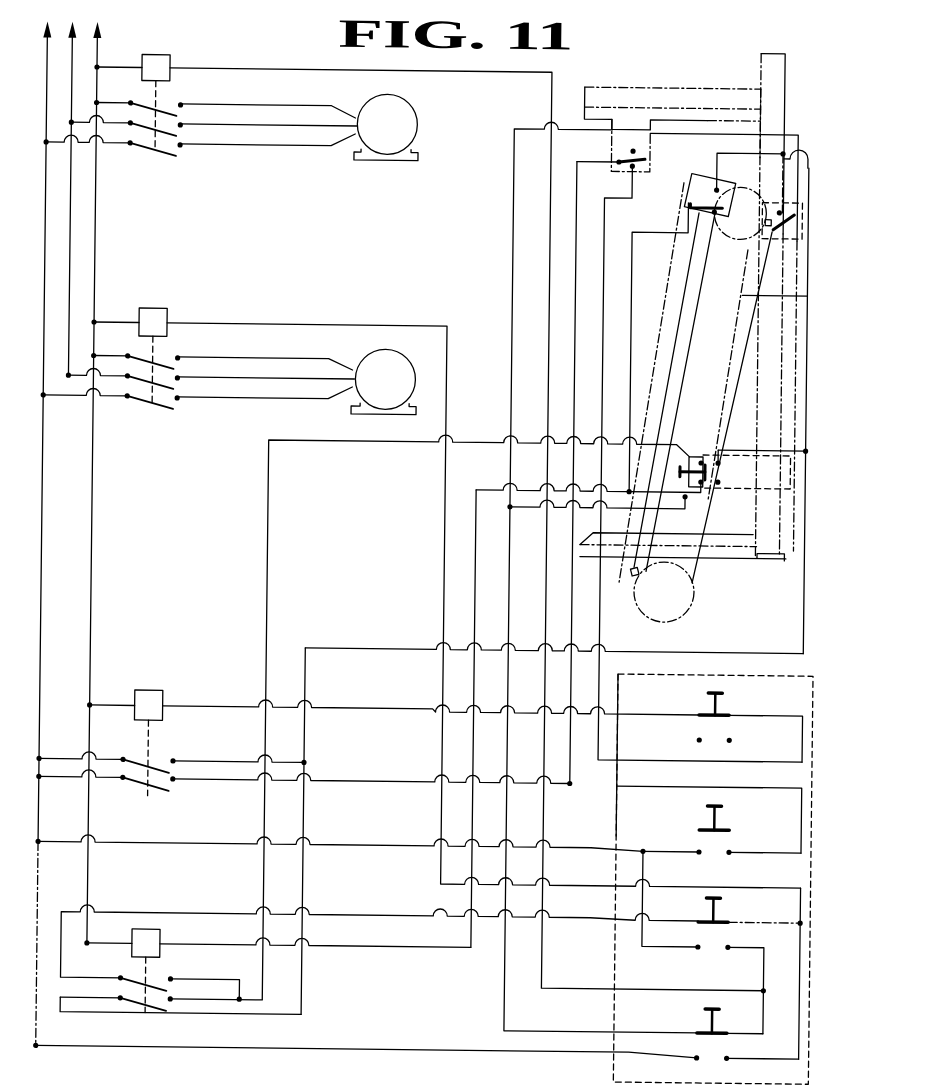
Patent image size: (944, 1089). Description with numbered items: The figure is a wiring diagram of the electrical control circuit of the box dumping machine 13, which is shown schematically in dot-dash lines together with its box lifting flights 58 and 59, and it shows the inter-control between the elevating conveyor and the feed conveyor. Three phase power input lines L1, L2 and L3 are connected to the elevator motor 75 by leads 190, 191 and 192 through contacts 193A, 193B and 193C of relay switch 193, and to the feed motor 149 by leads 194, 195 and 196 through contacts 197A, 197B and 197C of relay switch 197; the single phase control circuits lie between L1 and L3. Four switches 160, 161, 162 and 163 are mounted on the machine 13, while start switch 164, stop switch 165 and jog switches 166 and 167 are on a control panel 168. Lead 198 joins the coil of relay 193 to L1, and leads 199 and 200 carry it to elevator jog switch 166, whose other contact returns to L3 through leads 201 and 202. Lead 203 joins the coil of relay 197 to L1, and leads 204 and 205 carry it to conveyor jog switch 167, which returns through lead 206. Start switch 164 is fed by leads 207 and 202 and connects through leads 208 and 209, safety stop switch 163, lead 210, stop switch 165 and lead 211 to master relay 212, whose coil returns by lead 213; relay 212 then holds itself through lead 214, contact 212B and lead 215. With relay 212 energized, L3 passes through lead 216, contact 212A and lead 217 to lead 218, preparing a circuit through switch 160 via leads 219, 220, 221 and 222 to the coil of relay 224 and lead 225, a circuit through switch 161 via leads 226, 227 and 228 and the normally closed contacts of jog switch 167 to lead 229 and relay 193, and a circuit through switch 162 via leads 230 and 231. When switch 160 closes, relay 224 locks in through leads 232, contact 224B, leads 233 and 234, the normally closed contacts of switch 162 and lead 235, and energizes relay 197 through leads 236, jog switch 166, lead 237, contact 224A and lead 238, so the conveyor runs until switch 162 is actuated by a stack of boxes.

The power input line L1 is at (97, 265).
The power input line L2 is at (72, 246).
The power input line L3 is at (47, 227).
The lead 198 is at (131, 49).
The relay switch 193 is at (158, 67).
The contact of relay switch 193 193A is at (163, 111).
The contact of relay switch 193 193B is at (170, 138).
The contact of relay switch 193 193C is at (148, 153).
The lead 190 is at (262, 104).
The lead 191 is at (268, 124).
The lead 192 is at (262, 144).
The stack elevator conveyor motor 75 is at (410, 124).
The lead 199 is at (354, 68).
The machine 13 is at (684, 80).
The lead 227 is at (515, 227).
The lead 220 is at (763, 128).
The lead 226 is at (774, 146).
The safety stop switch 163 is at (642, 153).
The switch 160 is at (700, 198).
The lead 210 is at (607, 206).
The box lifting flight 59 is at (766, 213).
The switch 161 is at (782, 232).
The lead 221 is at (634, 268).
The lead 219 is at (758, 288).
The lead 209 is at (578, 266).
The lead 203 is at (110, 322).
The relay switch 197 is at (158, 322).
The contact of relay switch 197 197A is at (164, 366).
The contact of relay switch 197 197B is at (166, 388).
The contact of relay switch 197 197C is at (164, 410).
The lead 194 is at (262, 359).
The lead 195 is at (306, 380).
The lead 196 is at (262, 398).
The feed conveyor motor 149 is at (390, 372).
The lead 204 is at (330, 322).
The lead 234 is at (273, 497).
The lead 230 is at (723, 447).
The two-position switch 162 is at (710, 465).
The lead 235 is at (690, 492).
The lead 231 is at (723, 480).
The lead 222 is at (481, 572).
The lead 228 is at (515, 591).
The lead 218 is at (376, 645).
The box lifting flight 58 is at (638, 588).
The control panel 168 is at (712, 666).
The lead 211 is at (398, 708).
The stop switch 165 is at (735, 691).
The lead 213 is at (112, 705).
The master relay 212 is at (158, 705).
The relay contact 212A is at (162, 766).
The relay contact 212B is at (160, 789).
The lead 216 is at (50, 759).
The lead 217 is at (196, 769).
The lead 214 is at (72, 778).
The lead 215 is at (360, 778).
The lead 202 is at (346, 842).
The lead 207 is at (652, 845).
The start switch 164 is at (730, 818).
The lead 208 is at (752, 845).
The lead 237 is at (142, 912).
The relay 224 is at (170, 943).
The lead 225 is at (136, 943).
The relay contact 224A is at (176, 990).
The relay contact 224B is at (160, 1010).
The lead 238 is at (312, 966).
The lead 232 is at (312, 986).
The lead 233 is at (236, 1000).
The lead 206 is at (432, 1046).
The elevator jog switch 166 is at (728, 912).
The lead 236 is at (792, 918).
The lead 201 is at (650, 943).
The lead 200 is at (774, 956).
The lead 205 is at (810, 970).
The conveyor jog switch 167 is at (708, 1025).
The lead 229 is at (776, 998).